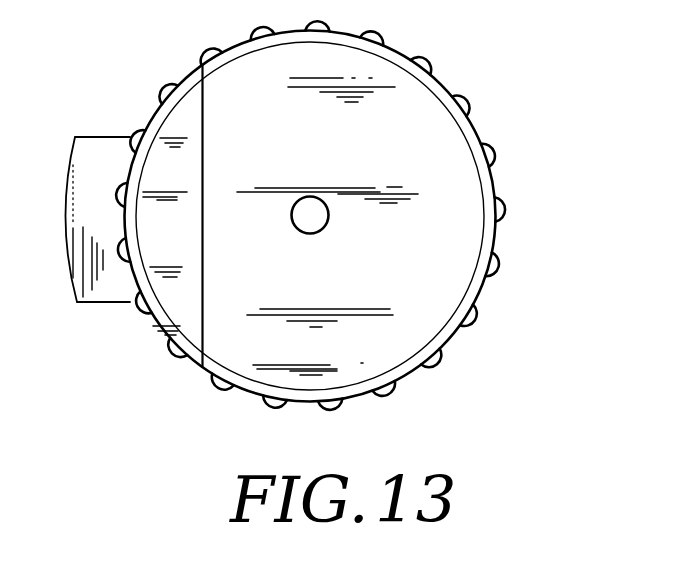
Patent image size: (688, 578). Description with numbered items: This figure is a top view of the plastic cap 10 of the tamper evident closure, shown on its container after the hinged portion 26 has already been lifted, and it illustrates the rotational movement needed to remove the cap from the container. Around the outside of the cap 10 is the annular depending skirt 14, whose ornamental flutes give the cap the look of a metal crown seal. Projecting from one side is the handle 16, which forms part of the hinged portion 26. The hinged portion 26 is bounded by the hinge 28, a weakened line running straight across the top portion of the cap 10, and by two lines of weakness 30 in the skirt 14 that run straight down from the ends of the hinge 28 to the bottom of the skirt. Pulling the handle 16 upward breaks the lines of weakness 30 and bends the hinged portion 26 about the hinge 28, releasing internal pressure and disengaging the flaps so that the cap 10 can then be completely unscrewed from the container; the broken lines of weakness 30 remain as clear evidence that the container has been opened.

The cap 10 is at (518, 91).
The annular depending skirt 14 is at (158, 326).
The handle 16 is at (98, 137).
The hinged portion 26 is at (166, 97).
The hinge 28 is at (204, 95).
The lines of weakness 30 is at (202, 66).